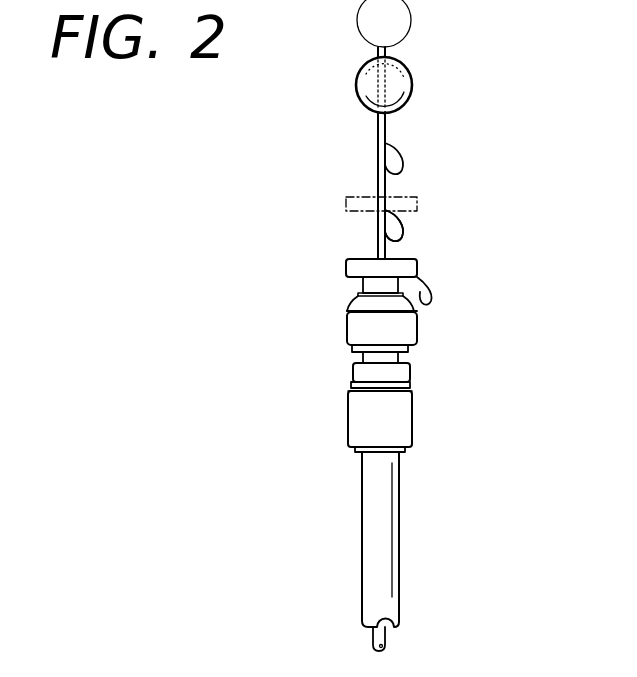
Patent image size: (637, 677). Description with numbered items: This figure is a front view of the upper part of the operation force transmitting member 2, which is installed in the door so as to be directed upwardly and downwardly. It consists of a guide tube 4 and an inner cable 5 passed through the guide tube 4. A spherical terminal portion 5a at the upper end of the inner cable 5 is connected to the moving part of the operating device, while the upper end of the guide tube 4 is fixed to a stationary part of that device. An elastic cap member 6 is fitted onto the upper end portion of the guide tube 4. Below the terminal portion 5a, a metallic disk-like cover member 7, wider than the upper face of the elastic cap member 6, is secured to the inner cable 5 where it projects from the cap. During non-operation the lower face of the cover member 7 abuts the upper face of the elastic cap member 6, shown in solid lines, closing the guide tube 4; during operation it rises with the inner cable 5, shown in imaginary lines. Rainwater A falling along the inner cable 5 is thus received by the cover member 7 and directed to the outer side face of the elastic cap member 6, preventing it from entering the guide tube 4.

The operation force transmitting member 2 is at (412, 492).
The guide tube 4 is at (362, 530).
The inner cable 5 is at (378, 138).
The terminal portion 5a is at (412, 82).
The elastic cap member 6 is at (417, 325).
The cover member 7 is at (417, 200).
The rainwater A is at (401, 228).